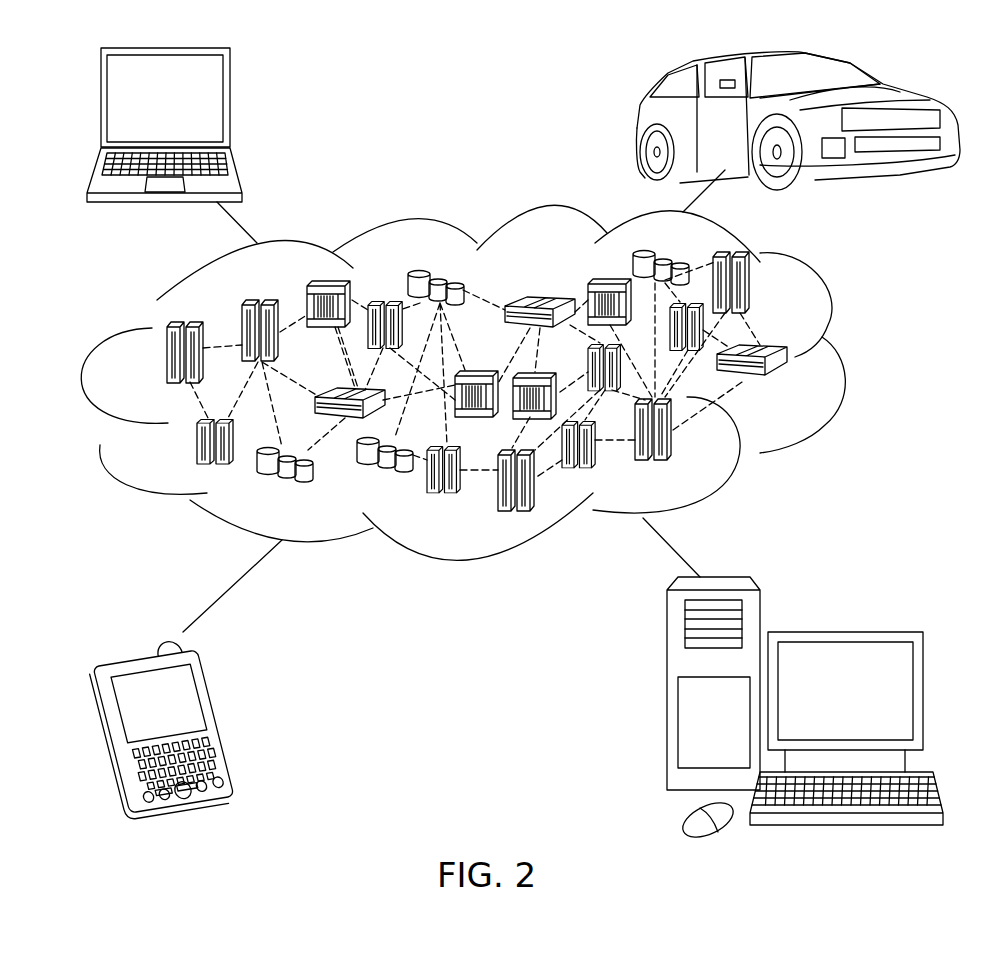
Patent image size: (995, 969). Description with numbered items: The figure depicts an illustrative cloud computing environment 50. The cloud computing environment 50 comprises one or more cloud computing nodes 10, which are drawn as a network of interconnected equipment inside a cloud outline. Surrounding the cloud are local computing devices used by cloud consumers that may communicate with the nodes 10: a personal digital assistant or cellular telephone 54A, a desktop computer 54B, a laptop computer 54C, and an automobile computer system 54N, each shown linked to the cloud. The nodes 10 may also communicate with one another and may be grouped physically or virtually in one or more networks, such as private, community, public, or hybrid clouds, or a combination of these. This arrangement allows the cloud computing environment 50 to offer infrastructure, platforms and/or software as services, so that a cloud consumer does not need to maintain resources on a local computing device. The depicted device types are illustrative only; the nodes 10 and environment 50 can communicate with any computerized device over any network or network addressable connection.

The cloud computing node 10 is at (790, 389).
The cloud computing environment 50 is at (842, 360).
The personal digital assistant or cellular telephone 54A is at (220, 715).
The desktop computer 54B is at (842, 632).
The laptop computer 54C is at (230, 109).
The automobile computer system 54N is at (640, 123).